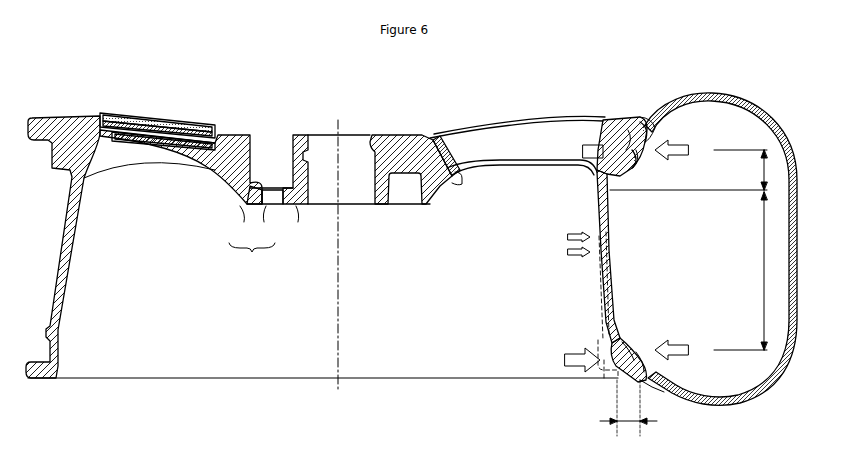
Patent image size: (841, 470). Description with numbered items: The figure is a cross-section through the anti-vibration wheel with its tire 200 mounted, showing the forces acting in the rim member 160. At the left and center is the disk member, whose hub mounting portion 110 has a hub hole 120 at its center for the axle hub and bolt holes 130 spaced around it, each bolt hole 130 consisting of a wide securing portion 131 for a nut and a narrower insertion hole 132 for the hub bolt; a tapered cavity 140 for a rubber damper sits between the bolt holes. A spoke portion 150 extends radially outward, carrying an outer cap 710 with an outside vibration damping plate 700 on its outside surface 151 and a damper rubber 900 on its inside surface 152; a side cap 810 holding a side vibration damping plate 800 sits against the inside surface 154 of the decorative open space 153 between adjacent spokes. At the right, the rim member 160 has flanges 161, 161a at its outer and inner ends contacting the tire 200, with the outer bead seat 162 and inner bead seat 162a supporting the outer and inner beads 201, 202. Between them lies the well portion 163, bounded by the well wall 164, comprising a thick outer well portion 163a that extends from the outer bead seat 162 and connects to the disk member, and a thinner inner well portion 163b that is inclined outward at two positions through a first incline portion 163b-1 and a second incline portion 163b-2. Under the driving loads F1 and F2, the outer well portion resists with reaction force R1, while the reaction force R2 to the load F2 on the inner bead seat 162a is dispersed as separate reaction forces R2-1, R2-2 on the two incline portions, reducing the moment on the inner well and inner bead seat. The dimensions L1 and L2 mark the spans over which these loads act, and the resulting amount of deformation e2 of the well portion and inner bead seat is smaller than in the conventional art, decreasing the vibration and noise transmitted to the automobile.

The hub mounting portion 110 is at (291, 204).
The hub hole 120 is at (358, 206).
The bolt hole 130 is at (252, 255).
The securing portion 131 is at (247, 203).
The insertion hole 132 is at (270, 204).
The cavity 140 is at (408, 205).
The spoke portion 150 is at (140, 133).
The outside surface of the spoke portion 151 is at (100, 117).
The inside surface of the spoke portion 152 is at (103, 138).
The decorative open space 153 is at (512, 126).
The inside surface of the decorative open space 154 is at (607, 135).
The rim member 160 is at (641, 306).
The flange 161 is at (648, 118).
The flange 161a is at (655, 372).
The outer bead seat 162 is at (632, 146).
The inner bead seat 162a is at (632, 342).
The well portion 163 is at (688, 214).
The outer well portion 163a is at (608, 208).
The inner well portion 163b is at (658, 234).
The first incline portion 163b-1 is at (609, 236).
The second incline portion 163b-2 is at (609, 254).
The well wall 164 is at (618, 190).
The tire 200 is at (757, 100).
The outer bead 201 is at (640, 162).
The inner bead 202 is at (645, 350).
The outside vibration damping plate 700 is at (165, 124).
The outer cap 710 is at (199, 128).
The side vibration damping plate 800 is at (442, 172).
The side cap 810 is at (460, 178).
The damper rubber 900 is at (136, 142).
The reaction force R1 is at (582, 151).
The reaction force R2 is at (572, 360).
The reaction force R2-1 is at (565, 237).
The reaction force R2-2 is at (565, 252).
The load F1 is at (711, 150).
The load F2 is at (711, 350).
The first length L1 is at (754, 170).
The second length L2 is at (754, 271).
The amount of deformation e2 is at (628, 413).